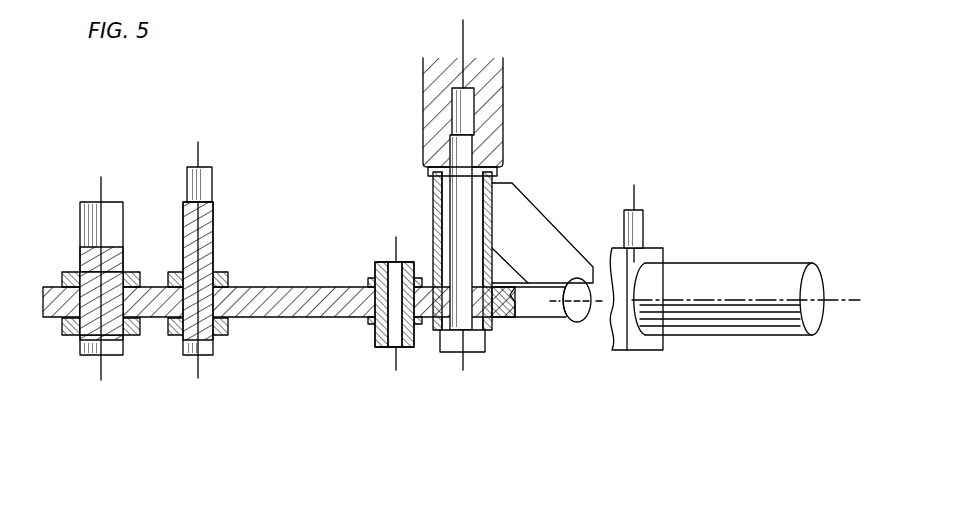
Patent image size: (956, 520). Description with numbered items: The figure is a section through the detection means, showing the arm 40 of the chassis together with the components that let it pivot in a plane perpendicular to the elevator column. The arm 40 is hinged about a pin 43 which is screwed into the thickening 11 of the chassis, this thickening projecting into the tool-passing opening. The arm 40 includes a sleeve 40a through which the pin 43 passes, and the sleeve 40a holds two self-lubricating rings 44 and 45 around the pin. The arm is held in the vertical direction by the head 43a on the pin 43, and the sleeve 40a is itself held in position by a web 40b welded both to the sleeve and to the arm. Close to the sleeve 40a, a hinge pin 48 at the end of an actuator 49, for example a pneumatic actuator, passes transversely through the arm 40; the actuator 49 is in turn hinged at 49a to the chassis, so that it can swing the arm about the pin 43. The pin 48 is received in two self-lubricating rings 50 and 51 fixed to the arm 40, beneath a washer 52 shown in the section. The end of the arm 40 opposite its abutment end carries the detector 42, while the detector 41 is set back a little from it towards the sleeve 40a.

The thickening 11 is at (433, 70).
The arm 40 is at (247, 300).
The sleeve 40a is at (438, 200).
The web 40b is at (530, 228).
The detector 41 is at (215, 208).
The detector 42 is at (113, 220).
The pin 43 is at (488, 166).
The head 43a is at (448, 352).
The self lubricating ring 44 is at (430, 162).
The self lubricating ring 45 is at (490, 325).
The hinge pin 48 is at (352, 320).
The actuator 49 is at (742, 278).
The hinge 49a is at (640, 220).
The self lubricating ring 50 is at (378, 265).
The self lubricating ring 51 is at (370, 280).
The washer 52 is at (375, 322).